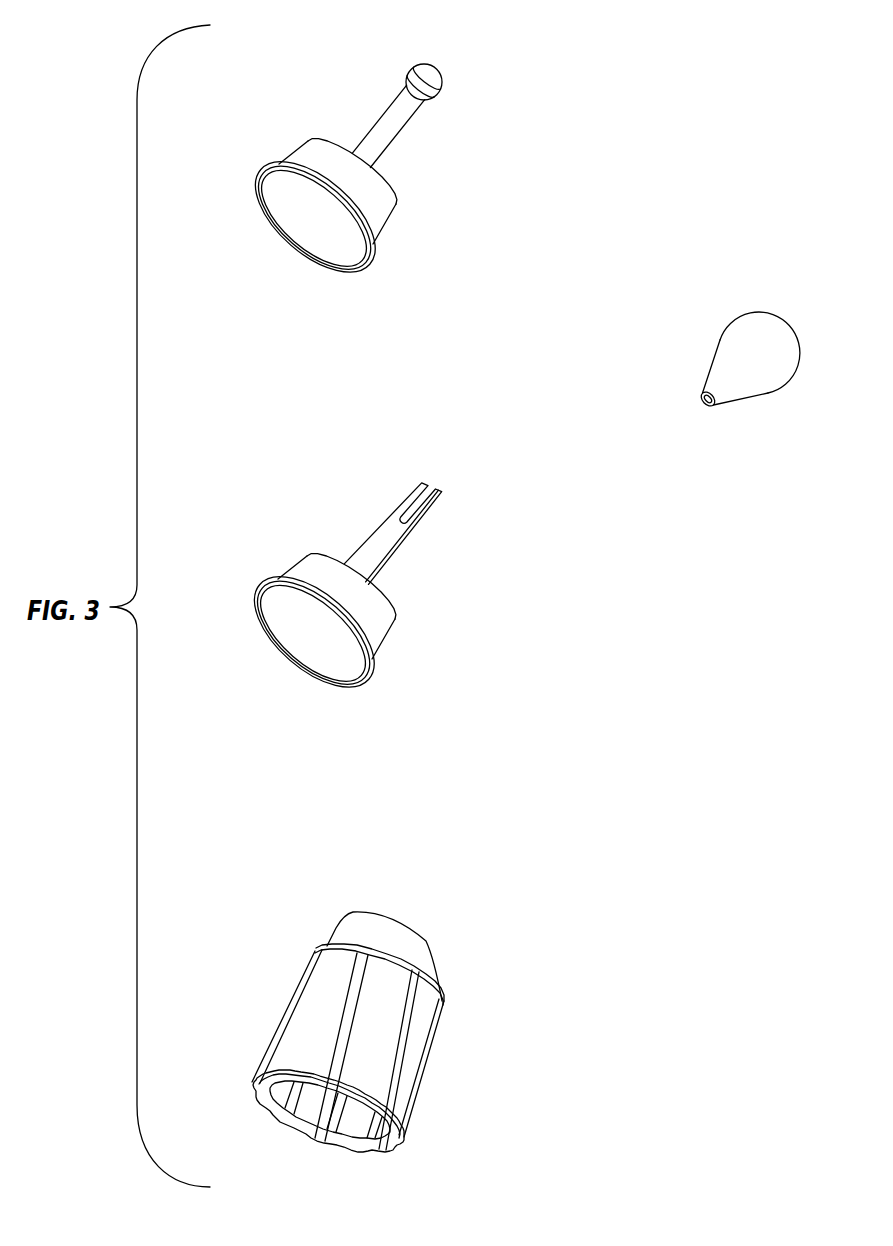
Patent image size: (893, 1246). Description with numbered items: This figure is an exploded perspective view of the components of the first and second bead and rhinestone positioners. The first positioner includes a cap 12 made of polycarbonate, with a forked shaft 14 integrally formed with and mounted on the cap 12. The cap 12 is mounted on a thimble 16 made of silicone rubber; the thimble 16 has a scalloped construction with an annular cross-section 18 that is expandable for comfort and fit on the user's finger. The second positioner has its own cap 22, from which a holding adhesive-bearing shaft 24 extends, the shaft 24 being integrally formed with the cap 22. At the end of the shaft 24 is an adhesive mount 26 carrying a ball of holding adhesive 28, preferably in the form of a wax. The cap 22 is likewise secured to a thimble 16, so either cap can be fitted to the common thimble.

The cap 12 is at (378, 628).
The forked shaft 14 is at (380, 535).
The thimble 16 is at (422, 1033).
The annular cross-section 18 is at (353, 1128).
The cap 22 is at (382, 217).
The holding adhesive-bearing shaft 24 is at (380, 125).
The adhesive mount 26 is at (442, 73).
The ball of holding adhesive 28 is at (758, 378).